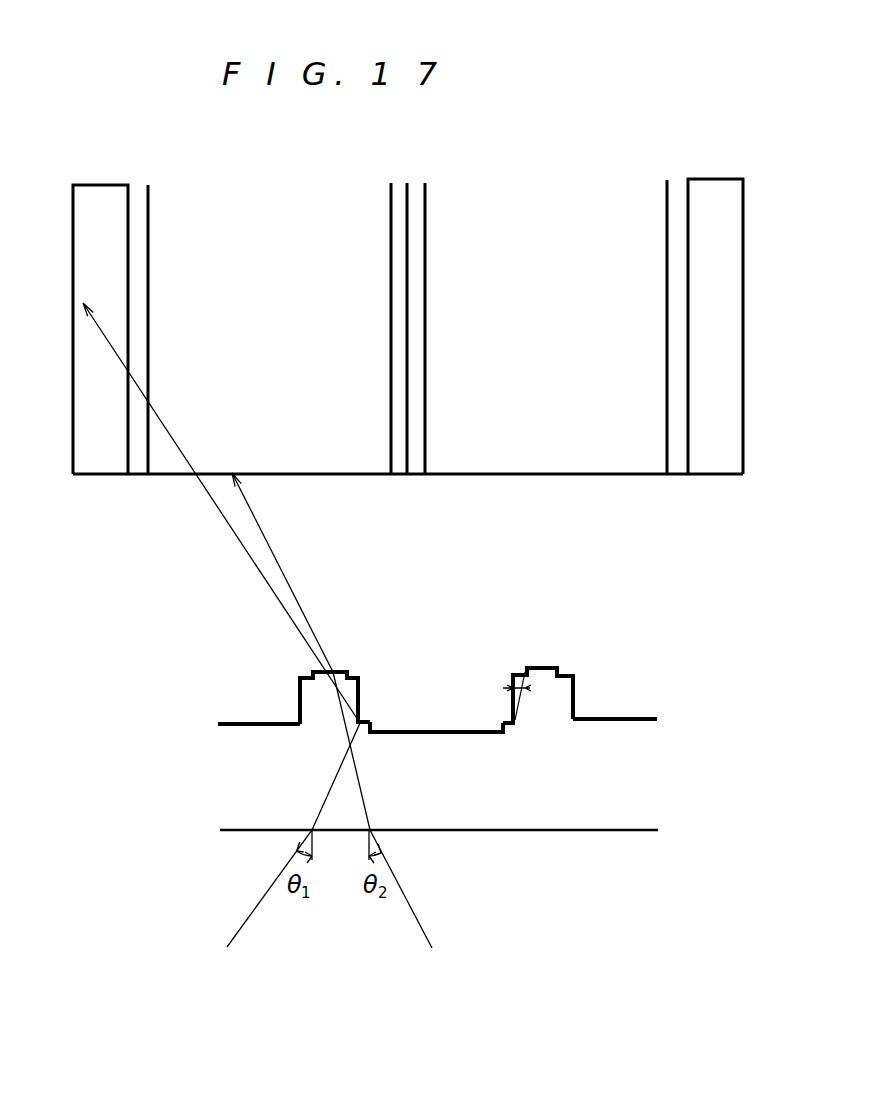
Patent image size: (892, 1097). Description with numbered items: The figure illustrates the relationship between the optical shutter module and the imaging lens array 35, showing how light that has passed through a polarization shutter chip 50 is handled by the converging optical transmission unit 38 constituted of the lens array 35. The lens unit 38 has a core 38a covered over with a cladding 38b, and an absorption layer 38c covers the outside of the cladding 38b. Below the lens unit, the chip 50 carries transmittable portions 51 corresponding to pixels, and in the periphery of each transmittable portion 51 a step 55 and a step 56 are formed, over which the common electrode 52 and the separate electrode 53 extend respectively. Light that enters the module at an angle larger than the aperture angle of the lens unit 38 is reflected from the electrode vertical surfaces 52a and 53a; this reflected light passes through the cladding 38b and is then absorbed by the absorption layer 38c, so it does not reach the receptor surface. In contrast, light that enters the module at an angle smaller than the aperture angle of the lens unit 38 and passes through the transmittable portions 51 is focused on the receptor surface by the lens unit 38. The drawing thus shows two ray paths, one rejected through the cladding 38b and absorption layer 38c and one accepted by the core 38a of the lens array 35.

The imaging lens array 35 is at (417, 340).
The converging optical transmission unit 38 is at (276, 208).
The core 38a is at (335, 457).
The cladding 38b is at (141, 462).
The absorption layer 38c is at (101, 462).
The polarization shutter chip 50 is at (557, 842).
The transmittable portion 51 is at (325, 710).
The common electrode 52 is at (434, 728).
The electrode vertical surface 52a is at (360, 700).
The separate electrode 53 is at (243, 723).
The electrode vertical surface 53a is at (298, 697).
The step 55 is at (348, 672).
The step 56 is at (305, 670).